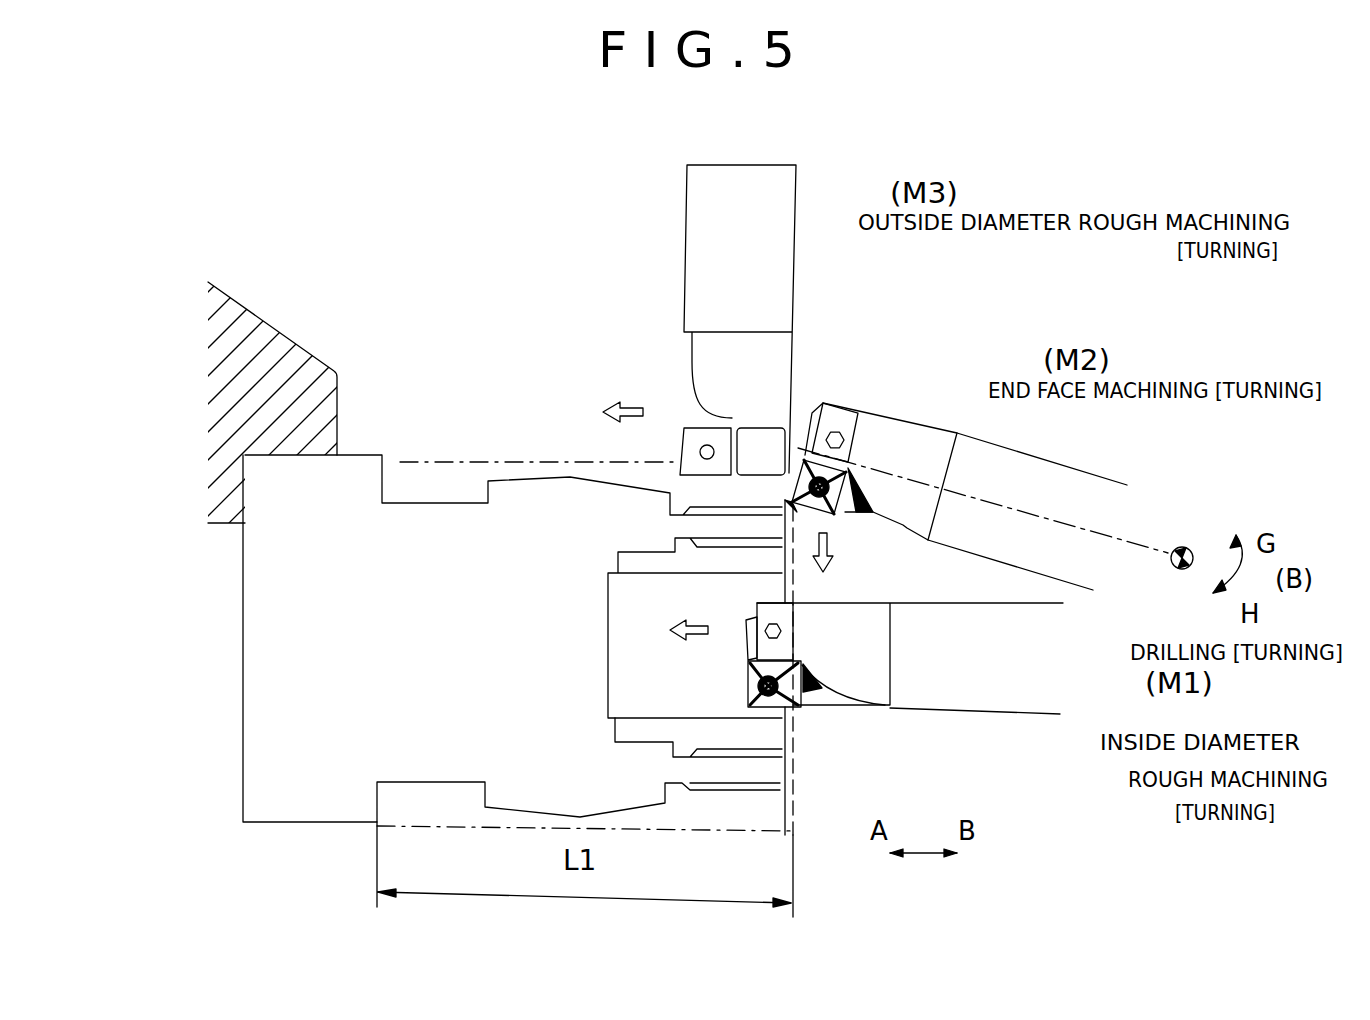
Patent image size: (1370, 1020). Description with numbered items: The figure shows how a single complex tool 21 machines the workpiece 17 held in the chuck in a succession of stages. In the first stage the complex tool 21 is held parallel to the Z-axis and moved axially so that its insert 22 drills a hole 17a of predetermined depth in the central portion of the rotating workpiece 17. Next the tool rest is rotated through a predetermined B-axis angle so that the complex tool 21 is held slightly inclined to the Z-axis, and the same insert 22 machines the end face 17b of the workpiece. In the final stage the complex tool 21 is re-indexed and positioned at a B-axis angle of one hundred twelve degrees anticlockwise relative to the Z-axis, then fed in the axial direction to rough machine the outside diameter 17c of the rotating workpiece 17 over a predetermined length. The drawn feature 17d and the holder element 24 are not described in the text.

The workpiece 17 is at (303, 803).
The hole 17a is at (859, 768).
The end face 17b is at (795, 596).
The outside diameter 17c is at (537, 462).
The inner end face of workpiece bore 17d is at (788, 716).
The complex tool 21 is at (795, 268).
The insert 22 is at (822, 511).
The tool holder 24 is at (680, 446).